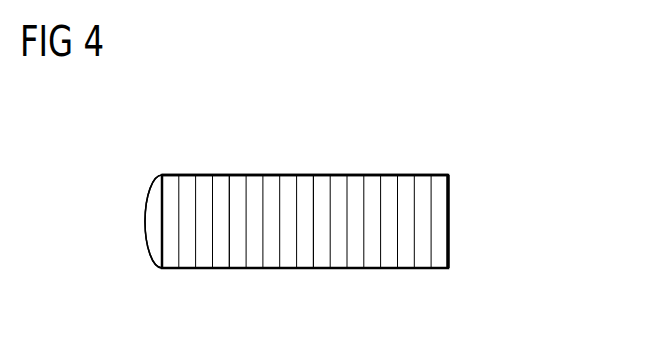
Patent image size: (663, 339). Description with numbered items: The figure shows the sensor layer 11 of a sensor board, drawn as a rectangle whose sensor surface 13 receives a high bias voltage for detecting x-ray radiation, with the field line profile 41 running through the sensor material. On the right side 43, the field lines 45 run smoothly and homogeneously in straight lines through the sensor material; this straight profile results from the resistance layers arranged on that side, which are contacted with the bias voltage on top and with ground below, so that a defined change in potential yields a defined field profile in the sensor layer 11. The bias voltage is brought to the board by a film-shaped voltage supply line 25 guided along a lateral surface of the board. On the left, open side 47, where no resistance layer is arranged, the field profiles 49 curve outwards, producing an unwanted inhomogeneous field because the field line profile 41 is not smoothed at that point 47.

The sensor layer 11 is at (449, 148).
The sensor surface 13 is at (353, 175).
The field line profile 41 is at (222, 187).
The field lines 45 is at (313, 248).
The left open side 47 is at (120, 192).
The field profiles 49 is at (148, 220).
The right side 43 is at (472, 192).
The voltage supply line 25 is at (449, 235).